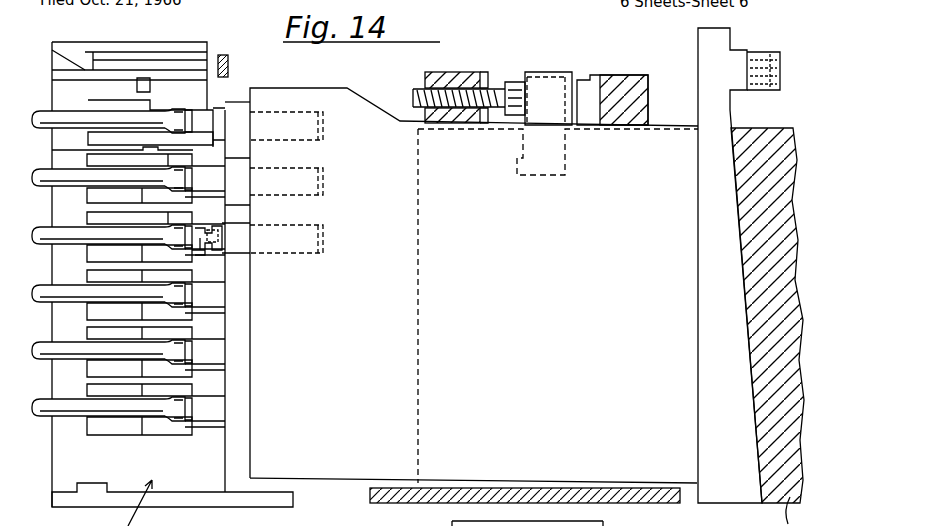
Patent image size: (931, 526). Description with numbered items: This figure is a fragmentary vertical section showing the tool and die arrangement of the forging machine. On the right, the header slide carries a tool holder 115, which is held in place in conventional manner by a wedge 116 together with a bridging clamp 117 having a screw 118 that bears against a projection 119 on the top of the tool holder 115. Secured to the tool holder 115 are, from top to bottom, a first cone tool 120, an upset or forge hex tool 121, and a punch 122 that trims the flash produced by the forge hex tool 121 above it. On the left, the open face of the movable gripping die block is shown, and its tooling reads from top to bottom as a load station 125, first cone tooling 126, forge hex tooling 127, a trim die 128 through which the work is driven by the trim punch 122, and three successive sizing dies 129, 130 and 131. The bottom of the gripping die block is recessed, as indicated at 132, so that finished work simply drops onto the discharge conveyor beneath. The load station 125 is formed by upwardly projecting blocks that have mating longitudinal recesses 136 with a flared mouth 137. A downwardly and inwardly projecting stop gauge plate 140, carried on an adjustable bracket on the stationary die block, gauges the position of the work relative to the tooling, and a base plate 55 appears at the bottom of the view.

The base plate 55 is at (672, 522).
The tool holder 115 is at (474, 285).
The wedge 116 is at (705, 325).
The bridging clamp 117 is at (648, 85).
The screw 118 is at (495, 85).
The projection 119 is at (552, 82).
The first cone tool 120 is at (242, 125).
The forge hex tool 121 is at (240, 180).
The punch 122 is at (240, 235).
The load station 125 is at (105, 62).
The first cone tooling 126 is at (155, 137).
The forge hex tooling 127 is at (95, 163).
The trim die 128 is at (205, 255).
The sizing die 129 is at (190, 313).
The sizing die 130 is at (185, 370).
The sizing die 131 is at (182, 428).
The recess 132 is at (180, 483).
The longitudinal recess 136 is at (93, 60).
The flared mouth 137 is at (57, 62).
The stop gauge plate 140 is at (228, 62).